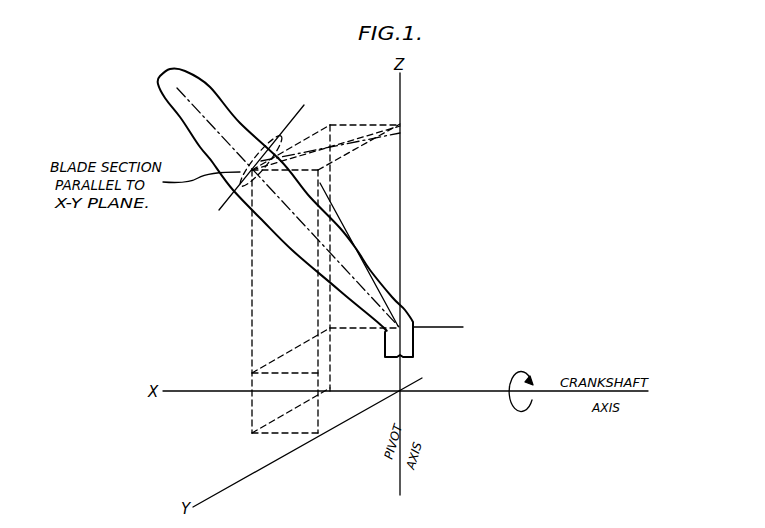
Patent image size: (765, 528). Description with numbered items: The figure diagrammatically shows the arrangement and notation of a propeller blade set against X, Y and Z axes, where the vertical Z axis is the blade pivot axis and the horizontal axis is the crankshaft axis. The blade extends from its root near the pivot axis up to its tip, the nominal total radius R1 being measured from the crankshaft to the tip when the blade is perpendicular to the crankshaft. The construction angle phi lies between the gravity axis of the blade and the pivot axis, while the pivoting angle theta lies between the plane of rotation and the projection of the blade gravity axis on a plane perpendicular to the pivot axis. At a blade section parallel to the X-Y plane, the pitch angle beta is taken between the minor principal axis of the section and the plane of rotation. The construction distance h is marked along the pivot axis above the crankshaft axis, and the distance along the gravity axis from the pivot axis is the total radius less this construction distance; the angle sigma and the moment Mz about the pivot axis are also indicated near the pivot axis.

The nominal total radius of propeller blade R1 is at (172, 84).
The pitch angle beta is at (272, 116).
The pivoting angle theta is at (333, 128).
The angle σ sigma is at (320, 183).
The construction angle phi is at (334, 253).
The construction distance h is at (458, 328).
The moment about pivot axis Mz is at (360, 500).